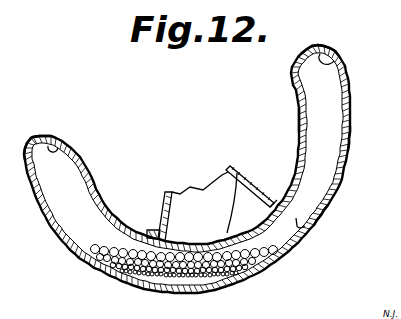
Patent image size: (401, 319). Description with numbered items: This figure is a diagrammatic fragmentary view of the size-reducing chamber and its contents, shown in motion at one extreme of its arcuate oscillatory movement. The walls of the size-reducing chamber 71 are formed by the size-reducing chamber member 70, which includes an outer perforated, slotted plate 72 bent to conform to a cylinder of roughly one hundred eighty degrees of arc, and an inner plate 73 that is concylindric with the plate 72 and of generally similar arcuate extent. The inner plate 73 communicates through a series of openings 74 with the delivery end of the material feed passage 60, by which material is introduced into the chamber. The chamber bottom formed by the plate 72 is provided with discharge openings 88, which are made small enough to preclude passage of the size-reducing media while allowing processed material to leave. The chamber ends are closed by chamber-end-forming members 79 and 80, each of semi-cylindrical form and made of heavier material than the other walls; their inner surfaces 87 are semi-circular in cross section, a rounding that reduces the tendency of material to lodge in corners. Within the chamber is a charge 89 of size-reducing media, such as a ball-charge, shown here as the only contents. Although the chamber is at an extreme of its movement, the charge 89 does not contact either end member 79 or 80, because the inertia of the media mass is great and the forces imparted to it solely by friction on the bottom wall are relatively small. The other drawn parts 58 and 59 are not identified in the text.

The size-reducing chamber member 70 is at (350, 100).
The outer perforated plate 72 is at (350, 143).
The inner plate 73 is at (300, 122).
The discharge openings 88 is at (302, 240).
The chamber-end-forming member 79 is at (37, 134).
The chamber-end-forming member 80 is at (323, 53).
The inner surfaces 87 is at (57, 143).
The size-reducing chamber 71 is at (305, 221).
The post 59 is at (165, 207).
The material feed passage 60 is at (192, 202).
The bar 58 is at (256, 192).
The openings 74 is at (236, 172).
The charge of size-reducing media 89 is at (137, 282).